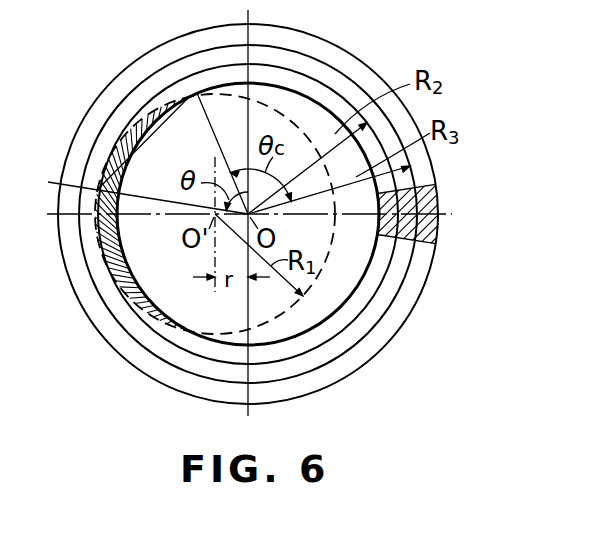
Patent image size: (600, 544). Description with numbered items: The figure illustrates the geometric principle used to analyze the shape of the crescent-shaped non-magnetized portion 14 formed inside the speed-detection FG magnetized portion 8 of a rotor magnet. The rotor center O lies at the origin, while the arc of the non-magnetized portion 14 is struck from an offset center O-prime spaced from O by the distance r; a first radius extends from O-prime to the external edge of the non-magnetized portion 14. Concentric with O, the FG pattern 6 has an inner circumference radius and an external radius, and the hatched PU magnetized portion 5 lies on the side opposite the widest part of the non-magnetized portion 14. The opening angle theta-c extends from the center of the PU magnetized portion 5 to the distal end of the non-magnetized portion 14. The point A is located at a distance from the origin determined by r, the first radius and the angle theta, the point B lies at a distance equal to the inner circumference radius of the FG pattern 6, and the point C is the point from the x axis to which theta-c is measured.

The PU magnetized portion 5 is at (451, 182).
The FG pattern 6 is at (275, 66).
The FG magnetized portion 8 is at (323, 107).
The non-magnetized portion 14 is at (112, 263).
The point A is at (93, 186).
The point B is at (141, 239).
The point C is at (120, 132).